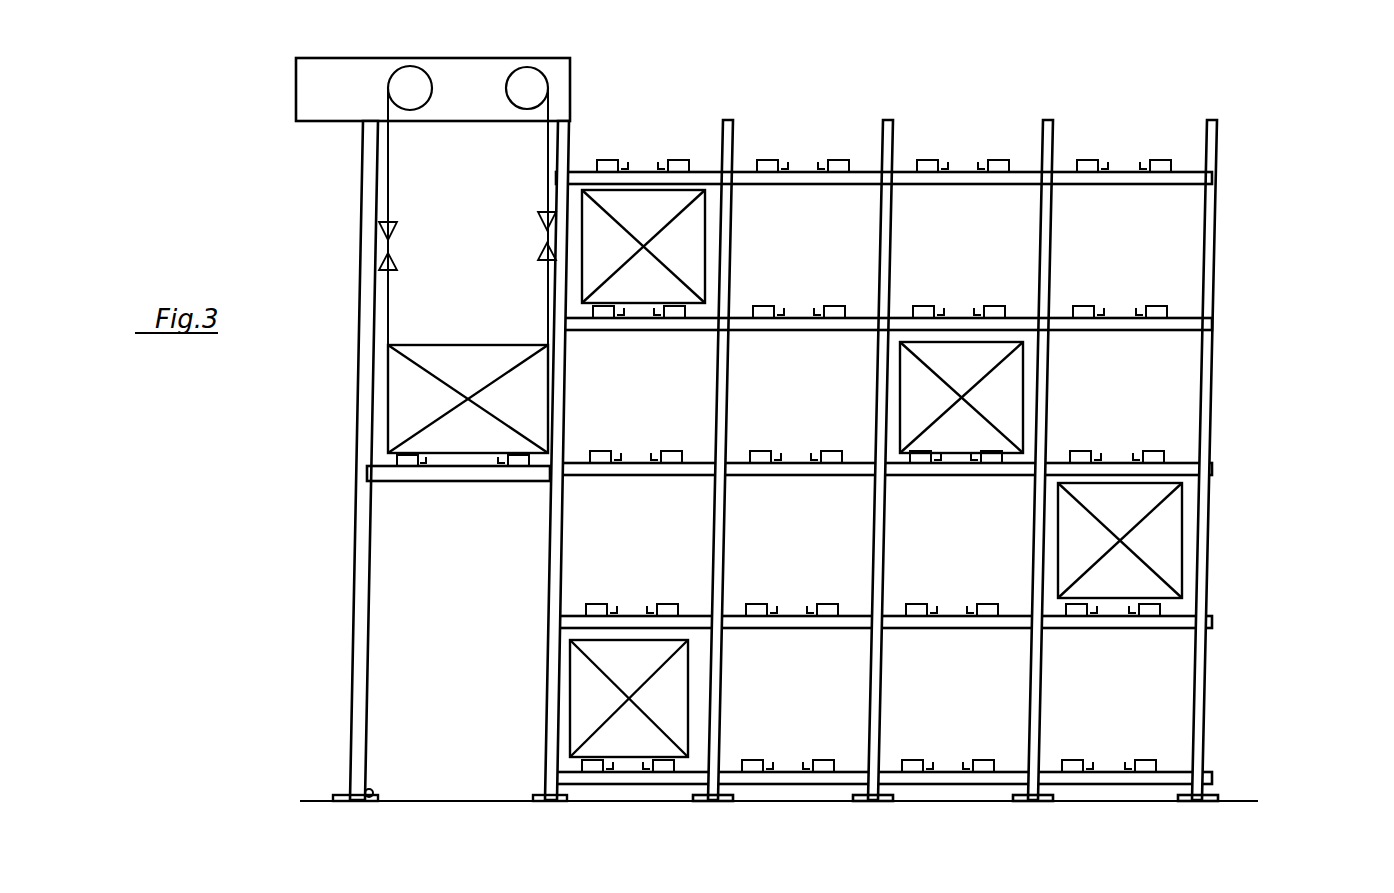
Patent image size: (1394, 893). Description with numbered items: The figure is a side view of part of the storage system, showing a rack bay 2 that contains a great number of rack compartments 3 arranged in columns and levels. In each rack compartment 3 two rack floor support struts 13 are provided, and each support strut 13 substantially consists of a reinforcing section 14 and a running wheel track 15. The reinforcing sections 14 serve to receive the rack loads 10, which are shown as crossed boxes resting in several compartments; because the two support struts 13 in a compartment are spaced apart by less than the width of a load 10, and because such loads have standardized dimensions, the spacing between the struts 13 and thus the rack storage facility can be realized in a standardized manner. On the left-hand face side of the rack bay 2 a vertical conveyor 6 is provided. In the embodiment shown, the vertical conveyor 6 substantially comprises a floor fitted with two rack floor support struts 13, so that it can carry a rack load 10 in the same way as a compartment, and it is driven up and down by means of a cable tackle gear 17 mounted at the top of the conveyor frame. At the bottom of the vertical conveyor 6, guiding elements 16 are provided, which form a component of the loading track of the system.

The rack bay 2 is at (1234, 318).
The rack compartment 3 is at (964, 253).
The vertical conveyor 6 is at (337, 541).
The rack load 10 is at (978, 373).
The rack floor support strut 13 is at (929, 144).
The reinforcing section 14 is at (952, 160).
The running wheel track 15 is at (980, 160).
The guiding element 16 is at (363, 805).
The cable tackle gear 17 is at (390, 145).